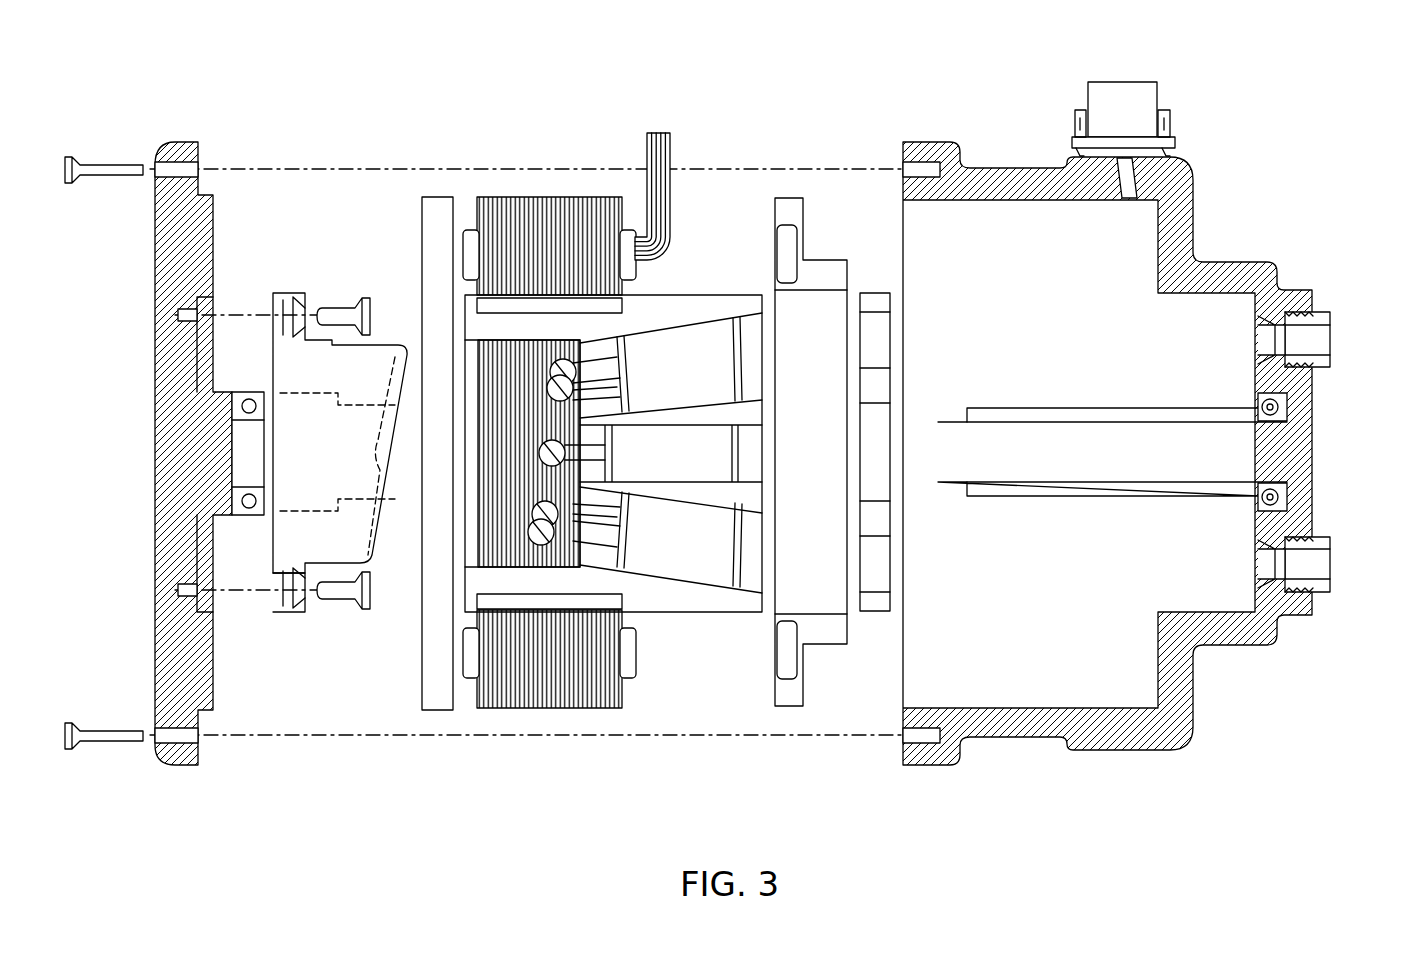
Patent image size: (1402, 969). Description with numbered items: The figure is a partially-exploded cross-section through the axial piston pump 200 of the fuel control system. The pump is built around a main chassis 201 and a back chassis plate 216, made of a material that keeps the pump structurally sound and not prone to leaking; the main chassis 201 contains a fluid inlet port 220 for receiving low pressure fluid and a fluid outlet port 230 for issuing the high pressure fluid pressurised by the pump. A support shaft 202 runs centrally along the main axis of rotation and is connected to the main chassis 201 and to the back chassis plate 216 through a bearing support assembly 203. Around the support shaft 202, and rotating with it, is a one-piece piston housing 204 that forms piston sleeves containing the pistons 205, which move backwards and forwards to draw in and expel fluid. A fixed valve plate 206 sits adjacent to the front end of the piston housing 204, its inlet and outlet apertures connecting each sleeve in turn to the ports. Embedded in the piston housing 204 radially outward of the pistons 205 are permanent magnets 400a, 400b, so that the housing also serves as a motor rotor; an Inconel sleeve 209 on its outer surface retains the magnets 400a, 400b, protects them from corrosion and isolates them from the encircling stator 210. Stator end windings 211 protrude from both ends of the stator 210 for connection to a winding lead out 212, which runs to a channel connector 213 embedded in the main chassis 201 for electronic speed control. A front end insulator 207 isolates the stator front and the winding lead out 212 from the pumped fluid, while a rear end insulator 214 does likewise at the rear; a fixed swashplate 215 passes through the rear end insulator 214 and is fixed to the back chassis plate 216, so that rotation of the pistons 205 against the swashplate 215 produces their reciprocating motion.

The axial piston pump 200 is at (1237, 117).
The main chassis 201 is at (1046, 182).
The support shaft 202 is at (990, 440).
The bearing support assembly 203 is at (1268, 492).
The piston housing 204 is at (686, 306).
The pistons 205 is at (720, 331).
The valve plate 206 is at (876, 332).
The front end insulator 207 is at (793, 698).
The Inconel sleeve 209 is at (633, 613).
The stator 210 is at (493, 212).
The stator end windings 211 is at (470, 248).
The winding lead out 212 is at (647, 158).
The channel connector 213 is at (1118, 104).
The rear end insulator 214 is at (425, 713).
The swashplate 215 is at (400, 350).
The back chassis plate 216 is at (178, 146).
The fluid inlet port 220 is at (1318, 572).
The fluid outlet port 230 is at (1318, 343).
The magnet 400a is at (480, 308).
The magnet 400b is at (470, 602).